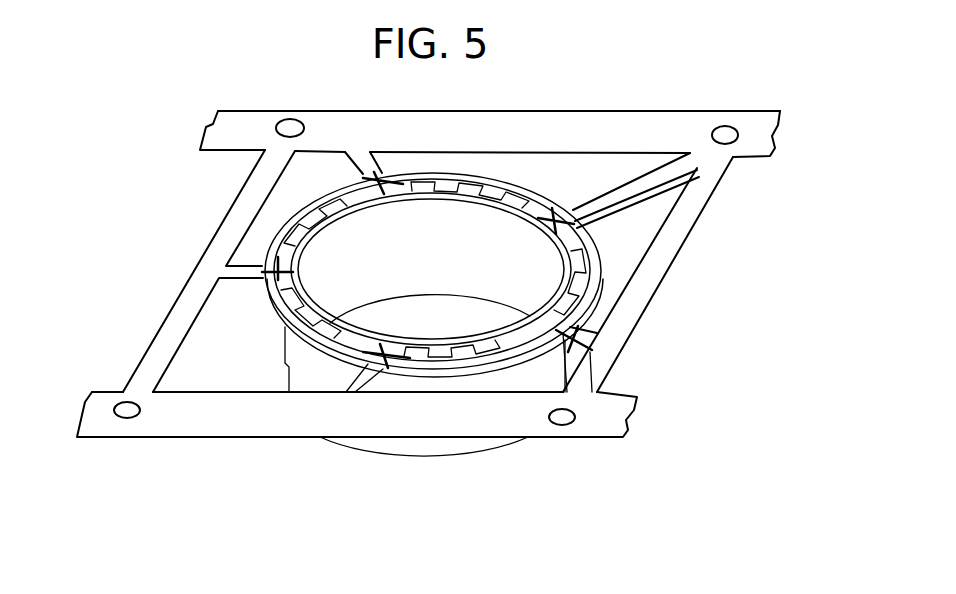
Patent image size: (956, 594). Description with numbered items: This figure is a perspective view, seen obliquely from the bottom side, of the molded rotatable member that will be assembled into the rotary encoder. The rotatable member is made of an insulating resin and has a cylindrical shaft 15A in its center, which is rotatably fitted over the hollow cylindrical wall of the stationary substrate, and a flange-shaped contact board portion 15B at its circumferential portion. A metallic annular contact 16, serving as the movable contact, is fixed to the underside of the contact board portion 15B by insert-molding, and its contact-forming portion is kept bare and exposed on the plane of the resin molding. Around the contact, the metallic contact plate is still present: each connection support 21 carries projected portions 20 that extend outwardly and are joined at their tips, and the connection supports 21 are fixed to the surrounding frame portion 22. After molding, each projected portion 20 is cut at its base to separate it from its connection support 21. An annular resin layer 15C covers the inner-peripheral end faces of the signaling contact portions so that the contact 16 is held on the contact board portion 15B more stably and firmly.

The cylindrical shaft 15A is at (503, 444).
The contact board portion 15B is at (410, 367).
The resin layer 15C is at (433, 383).
The metallic annular contact 16 is at (393, 367).
The projected portions 20 is at (371, 360).
The connection supports 21 is at (382, 365).
The surrounding frame portion 22 is at (752, 145).